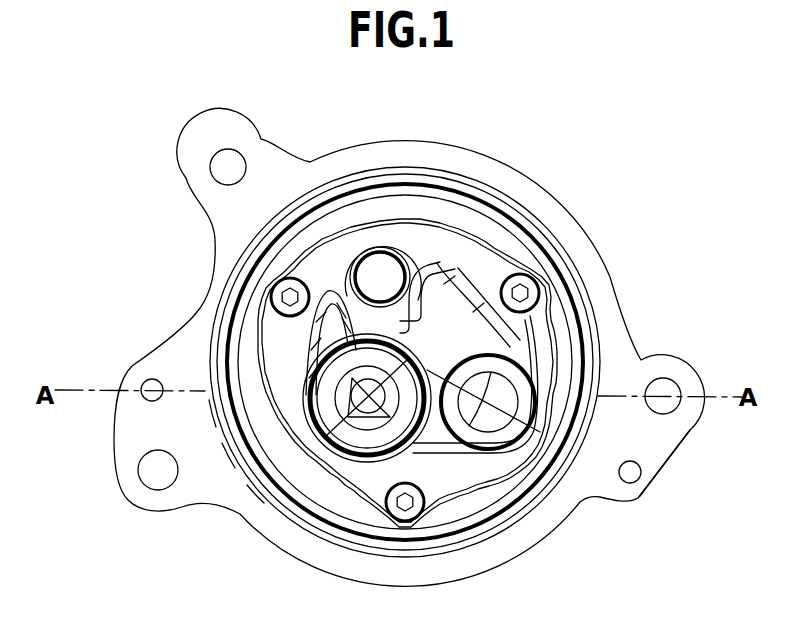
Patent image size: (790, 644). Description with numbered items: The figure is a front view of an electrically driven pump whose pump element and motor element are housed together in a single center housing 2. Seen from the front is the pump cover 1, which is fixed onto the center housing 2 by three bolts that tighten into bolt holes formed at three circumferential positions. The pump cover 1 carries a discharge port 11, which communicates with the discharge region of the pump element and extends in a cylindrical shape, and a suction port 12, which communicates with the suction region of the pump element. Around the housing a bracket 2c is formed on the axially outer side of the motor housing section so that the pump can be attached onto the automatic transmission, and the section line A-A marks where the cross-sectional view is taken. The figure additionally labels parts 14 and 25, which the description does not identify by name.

The pump cover 1 is at (414, 261).
The center housing 2 is at (321, 156).
The bracket 2c is at (667, 436).
The discharge port 11 is at (358, 440).
The suction port 12 is at (507, 433).
The bolt 14 is at (523, 293).
The mounting hole 25 is at (229, 158).